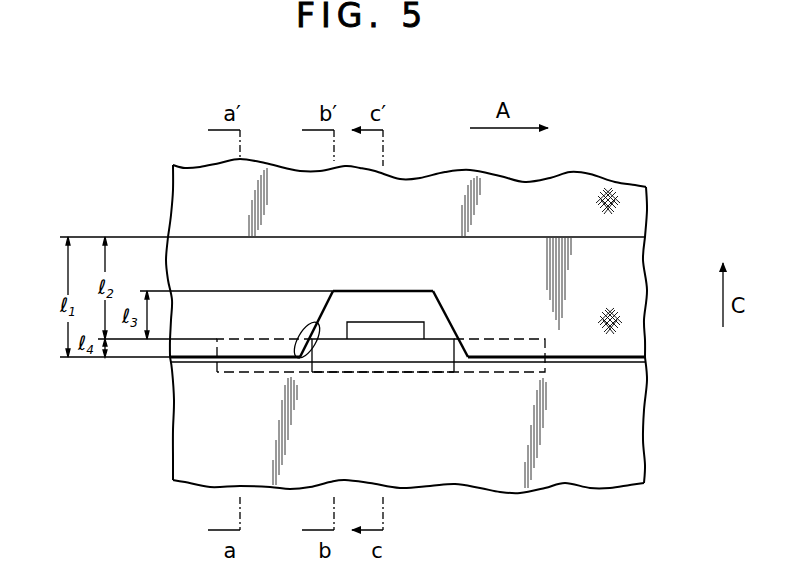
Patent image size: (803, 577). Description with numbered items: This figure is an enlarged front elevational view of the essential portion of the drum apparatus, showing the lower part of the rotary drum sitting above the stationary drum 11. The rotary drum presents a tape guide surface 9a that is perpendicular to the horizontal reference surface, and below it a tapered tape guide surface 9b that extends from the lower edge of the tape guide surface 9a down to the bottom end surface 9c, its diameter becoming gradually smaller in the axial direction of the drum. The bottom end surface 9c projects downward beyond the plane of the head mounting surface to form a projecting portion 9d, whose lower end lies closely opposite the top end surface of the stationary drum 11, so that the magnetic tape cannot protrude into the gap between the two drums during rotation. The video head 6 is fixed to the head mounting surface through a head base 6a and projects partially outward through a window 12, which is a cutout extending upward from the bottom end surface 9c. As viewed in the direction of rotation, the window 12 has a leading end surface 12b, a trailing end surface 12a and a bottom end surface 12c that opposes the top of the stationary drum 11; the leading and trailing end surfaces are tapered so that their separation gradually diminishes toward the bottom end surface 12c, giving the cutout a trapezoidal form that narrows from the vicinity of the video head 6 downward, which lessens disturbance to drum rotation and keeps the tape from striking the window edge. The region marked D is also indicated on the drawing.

The tape guide surface 9a is at (625, 203).
The tapered tape guide surface 9b is at (625, 320).
The bottom end surface 9c is at (640, 357).
The projecting portion 9d is at (185, 366).
The stationary drum 11 is at (645, 425).
The window 12 is at (384, 300).
The trailing end surface 12a is at (322, 303).
The leading end surface 12b is at (447, 307).
The bottom end surface 12c is at (350, 290).
The video head 6 is at (378, 339).
The head base 6a is at (418, 358).
The region D is at (305, 326).